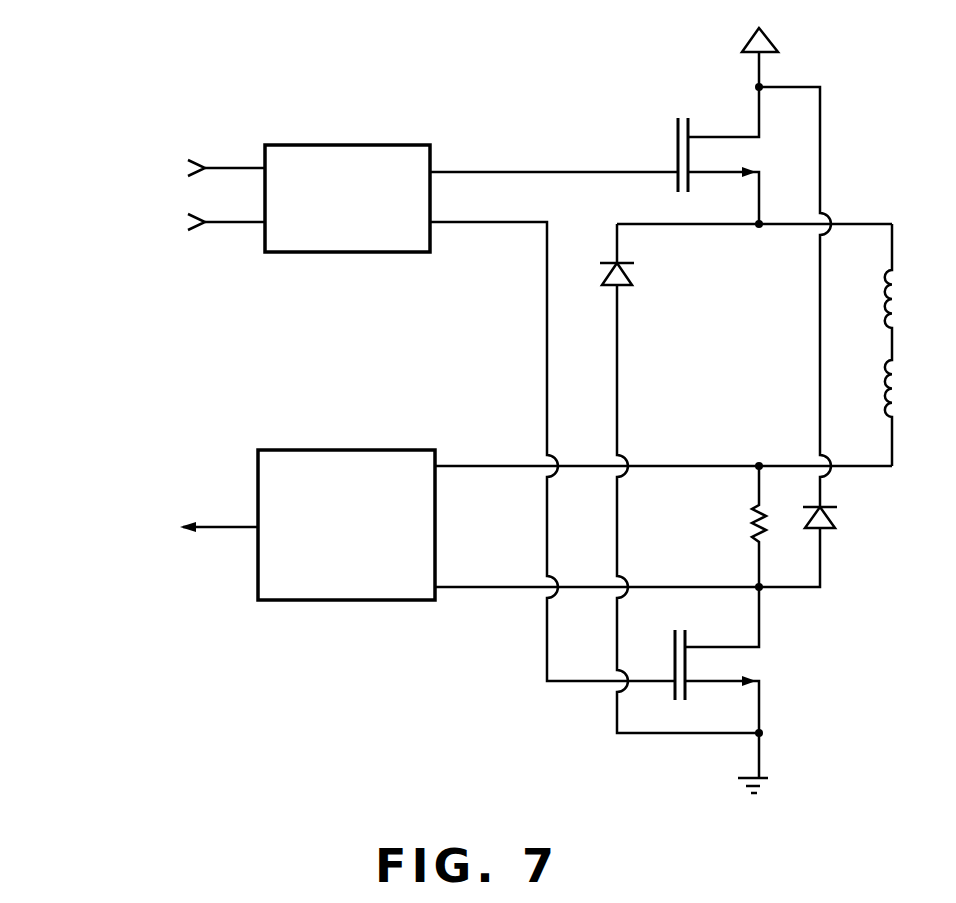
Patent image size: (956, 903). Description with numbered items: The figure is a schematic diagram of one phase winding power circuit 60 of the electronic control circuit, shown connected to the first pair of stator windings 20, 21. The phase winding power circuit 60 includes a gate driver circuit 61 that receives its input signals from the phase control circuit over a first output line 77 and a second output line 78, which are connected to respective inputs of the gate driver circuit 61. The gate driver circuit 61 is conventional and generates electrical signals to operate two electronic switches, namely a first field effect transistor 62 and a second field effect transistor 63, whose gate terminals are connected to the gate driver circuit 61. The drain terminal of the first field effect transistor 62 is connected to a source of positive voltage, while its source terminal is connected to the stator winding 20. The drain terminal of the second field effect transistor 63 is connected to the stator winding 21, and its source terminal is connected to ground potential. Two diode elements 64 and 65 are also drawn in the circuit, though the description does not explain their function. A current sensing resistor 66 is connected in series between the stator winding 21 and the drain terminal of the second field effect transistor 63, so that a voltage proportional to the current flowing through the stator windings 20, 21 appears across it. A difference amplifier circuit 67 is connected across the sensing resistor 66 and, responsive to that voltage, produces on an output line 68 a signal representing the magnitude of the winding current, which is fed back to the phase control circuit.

The phase winding power circuit 60 is at (418, 72).
The gate driver circuit 61 is at (405, 253).
The first field effect transistor 62 is at (678, 138).
The second field effect transistor 63 is at (670, 661).
The diode 64 is at (632, 278).
The diode 65 is at (834, 522).
The current sensing resistor 66 is at (748, 532).
The difference amplifier circuit 67 is at (360, 585).
The output line 68 is at (228, 525).
The first output line 77 is at (228, 166).
The second output line 78 is at (226, 224).
The stator winding 20 is at (880, 293).
The stator winding 21 is at (885, 400).